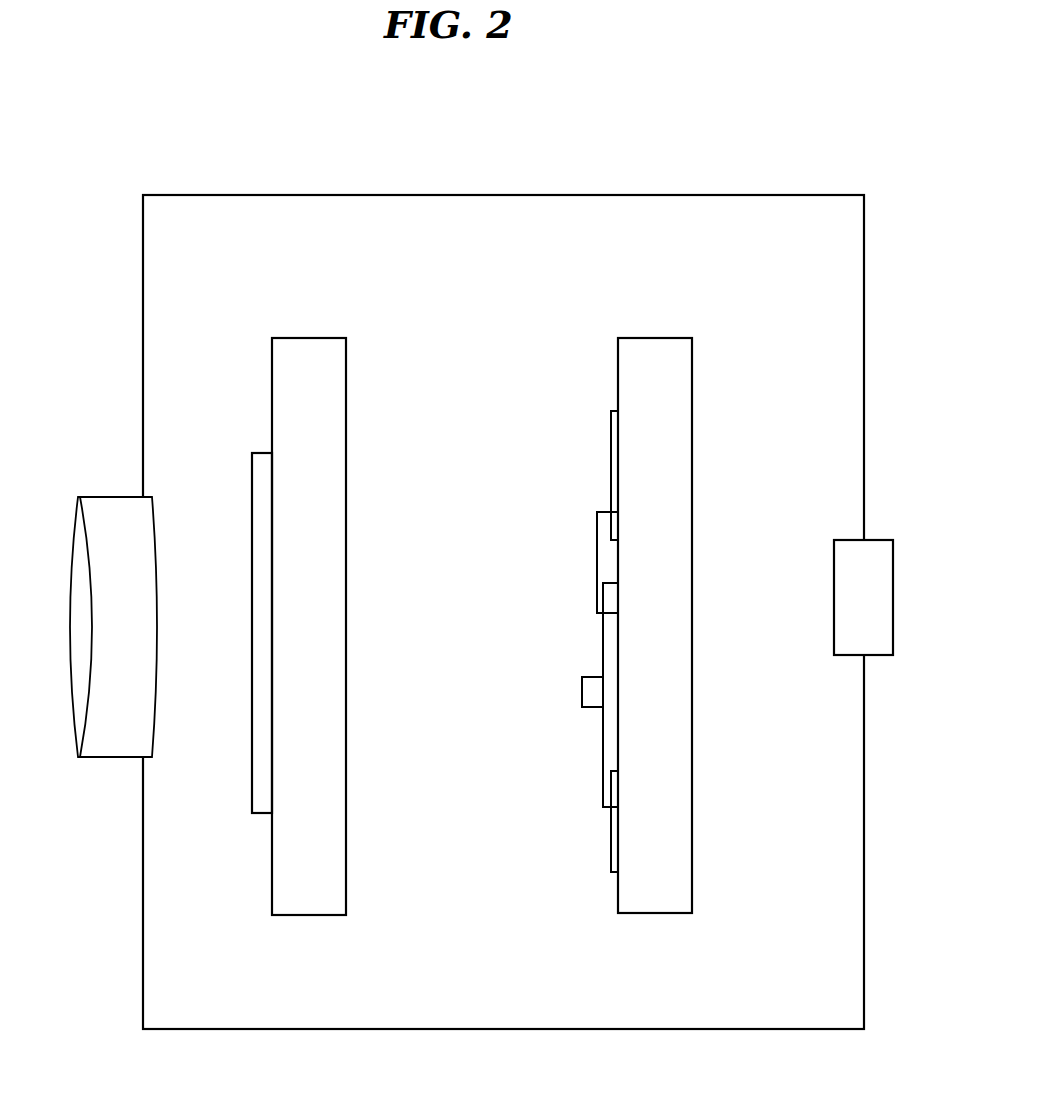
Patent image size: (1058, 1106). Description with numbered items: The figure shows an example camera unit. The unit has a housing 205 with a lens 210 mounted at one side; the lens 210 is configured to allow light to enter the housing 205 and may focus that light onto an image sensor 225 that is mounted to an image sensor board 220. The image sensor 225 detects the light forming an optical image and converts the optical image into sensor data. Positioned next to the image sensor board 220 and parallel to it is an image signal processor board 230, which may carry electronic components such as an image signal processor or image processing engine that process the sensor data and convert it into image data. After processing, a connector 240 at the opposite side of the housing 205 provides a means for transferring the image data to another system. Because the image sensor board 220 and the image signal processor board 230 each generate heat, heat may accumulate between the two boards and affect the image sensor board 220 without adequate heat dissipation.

The housing 205 is at (197, 195).
The lens 210 is at (112, 497).
The image sensor board 220 is at (316, 338).
The image sensor 225 is at (258, 453).
The image signal processor board 230 is at (673, 338).
The connector 240 is at (877, 540).